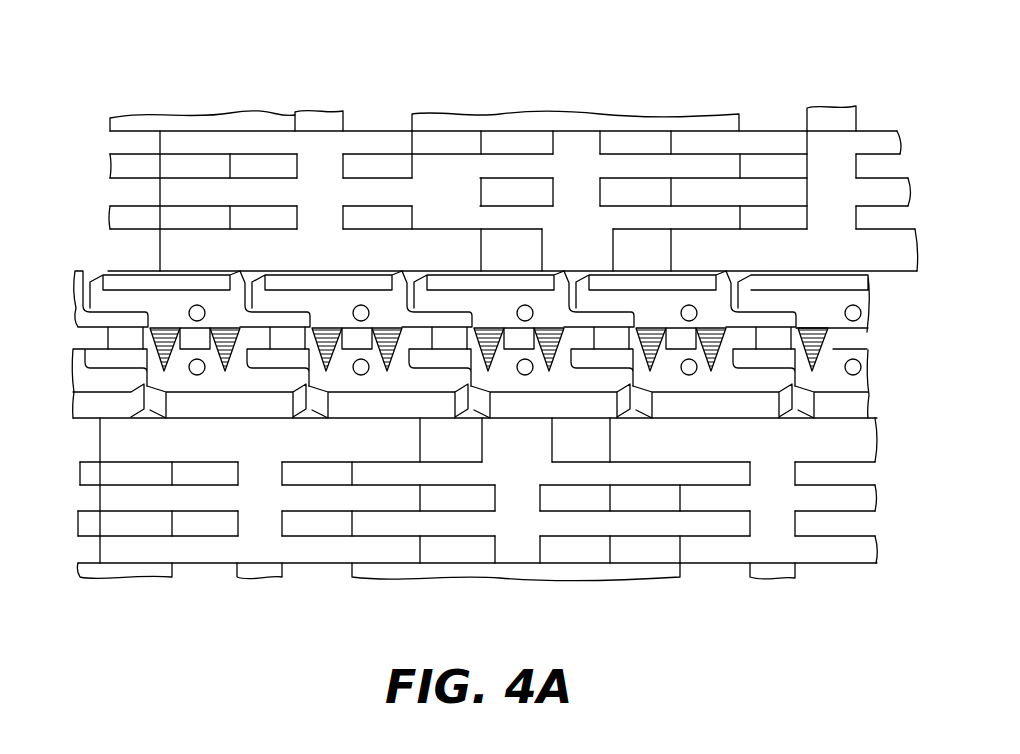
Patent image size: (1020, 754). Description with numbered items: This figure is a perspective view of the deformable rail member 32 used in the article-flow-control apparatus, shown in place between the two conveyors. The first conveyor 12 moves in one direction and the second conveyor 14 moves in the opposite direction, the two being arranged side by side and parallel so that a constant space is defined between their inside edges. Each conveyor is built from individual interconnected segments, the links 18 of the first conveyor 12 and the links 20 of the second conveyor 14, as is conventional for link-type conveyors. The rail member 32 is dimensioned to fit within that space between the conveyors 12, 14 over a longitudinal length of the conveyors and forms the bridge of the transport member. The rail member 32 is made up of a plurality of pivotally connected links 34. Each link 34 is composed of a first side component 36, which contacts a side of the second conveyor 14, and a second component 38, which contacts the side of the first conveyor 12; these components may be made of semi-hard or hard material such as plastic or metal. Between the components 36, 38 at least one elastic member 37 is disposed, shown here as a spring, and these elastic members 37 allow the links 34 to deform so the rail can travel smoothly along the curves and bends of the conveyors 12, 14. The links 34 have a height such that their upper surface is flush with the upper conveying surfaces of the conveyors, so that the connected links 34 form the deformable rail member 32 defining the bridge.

The first conveyor 12 is at (475, 537).
The second conveyor 14 is at (513, 140).
The links 18 is at (512, 565).
The links 20 is at (331, 110).
The deformable rail member 32 is at (176, 435).
The links 34 is at (483, 350).
The first side component 36 is at (299, 282).
The elastic member 37 is at (834, 348).
The second component 38 is at (367, 405).